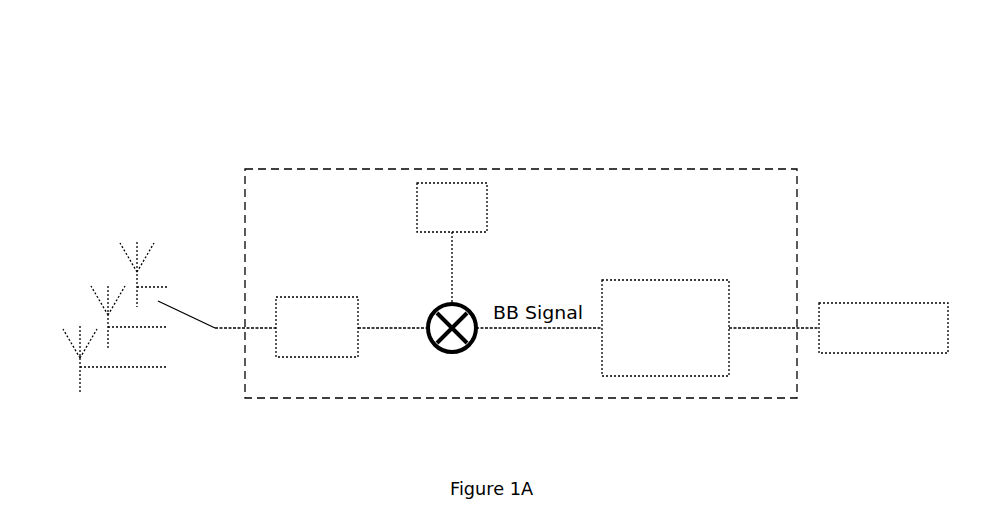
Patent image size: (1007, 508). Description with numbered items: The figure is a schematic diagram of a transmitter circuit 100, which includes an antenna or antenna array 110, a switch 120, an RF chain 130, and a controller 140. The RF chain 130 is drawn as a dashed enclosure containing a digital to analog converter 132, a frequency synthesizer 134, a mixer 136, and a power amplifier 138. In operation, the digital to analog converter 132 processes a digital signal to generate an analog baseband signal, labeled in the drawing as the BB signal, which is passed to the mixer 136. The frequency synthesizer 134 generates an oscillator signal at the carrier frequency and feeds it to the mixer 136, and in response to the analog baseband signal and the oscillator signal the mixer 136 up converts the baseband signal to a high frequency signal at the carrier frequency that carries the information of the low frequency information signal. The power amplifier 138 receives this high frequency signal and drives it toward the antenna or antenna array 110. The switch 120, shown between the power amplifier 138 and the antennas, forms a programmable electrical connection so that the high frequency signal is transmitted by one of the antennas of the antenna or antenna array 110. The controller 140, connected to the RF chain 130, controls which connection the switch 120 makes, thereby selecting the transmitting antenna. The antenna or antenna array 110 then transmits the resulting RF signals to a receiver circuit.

The transmitter circuit 100 is at (674, 50).
The antenna or antenna array 110 is at (70, 263).
The switch 120 is at (187, 277).
The RF chain 130 is at (487, 168).
The digital to analog converter 132 is at (729, 285).
The frequency synthesizer 134 is at (487, 213).
The mixer 136 is at (475, 340).
The power amplifier 138 is at (345, 296).
The controller 140 is at (893, 302).